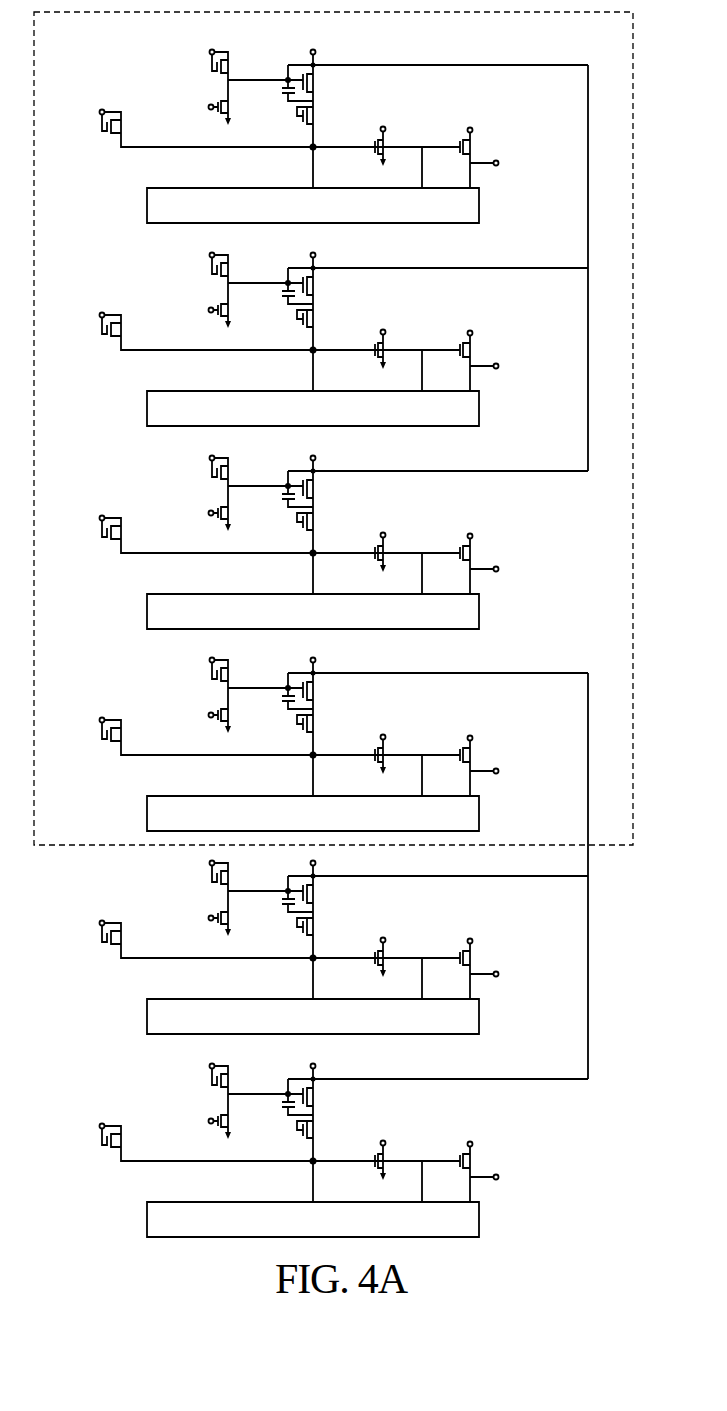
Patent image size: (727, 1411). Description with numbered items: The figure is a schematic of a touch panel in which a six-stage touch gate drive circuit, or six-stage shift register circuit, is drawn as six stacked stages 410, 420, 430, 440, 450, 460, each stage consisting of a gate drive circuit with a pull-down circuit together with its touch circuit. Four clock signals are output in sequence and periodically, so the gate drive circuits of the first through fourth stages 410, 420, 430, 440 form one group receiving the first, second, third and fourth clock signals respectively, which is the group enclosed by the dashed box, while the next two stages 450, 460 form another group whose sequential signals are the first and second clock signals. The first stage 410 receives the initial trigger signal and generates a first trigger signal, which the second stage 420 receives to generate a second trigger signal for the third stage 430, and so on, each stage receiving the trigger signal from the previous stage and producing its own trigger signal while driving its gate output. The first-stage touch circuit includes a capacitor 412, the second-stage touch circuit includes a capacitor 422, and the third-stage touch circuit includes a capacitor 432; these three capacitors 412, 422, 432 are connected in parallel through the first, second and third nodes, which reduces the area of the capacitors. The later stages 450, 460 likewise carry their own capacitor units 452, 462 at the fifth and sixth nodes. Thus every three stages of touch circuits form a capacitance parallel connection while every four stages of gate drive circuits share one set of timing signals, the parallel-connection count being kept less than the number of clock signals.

The first-stage gate drive circuit 410 is at (329, 129).
The second shift register stage 420 is at (329, 332).
The third shift register stage 430 is at (329, 535).
The fourth shift register stage 440 is at (329, 737).
The fifth shift register stage 450 is at (329, 940).
The sixth shift register stage 460 is at (329, 1143).
The capacitor 412 is at (285, 97).
The capacitor 422 is at (280, 310).
The capacitor 432 is at (280, 513).
The boost capacitor and transistor unit of fifth stage 452 is at (280, 918).
The boost capacitor and transistor unit of sixth stage 462 is at (280, 1121).